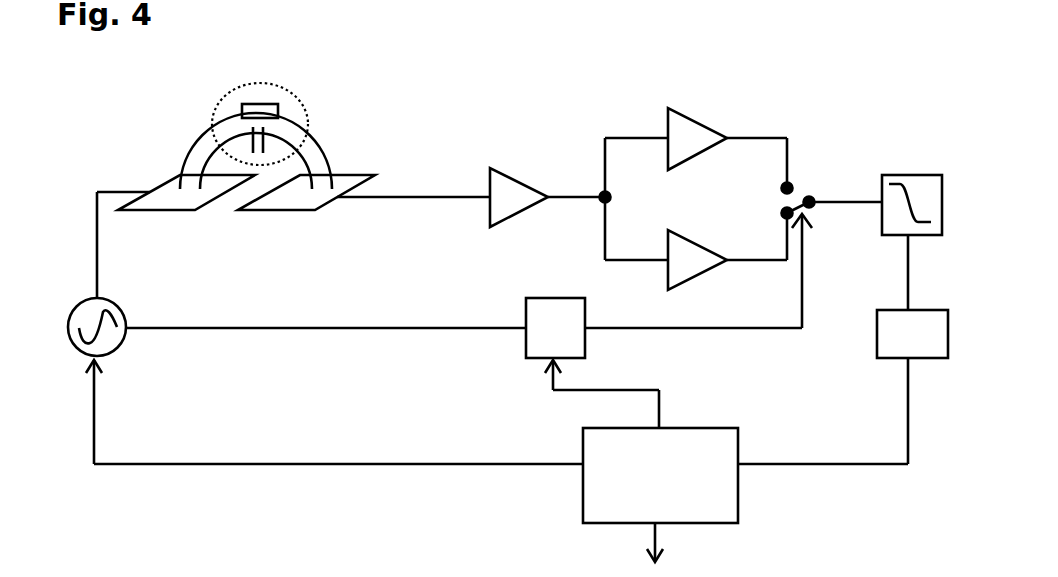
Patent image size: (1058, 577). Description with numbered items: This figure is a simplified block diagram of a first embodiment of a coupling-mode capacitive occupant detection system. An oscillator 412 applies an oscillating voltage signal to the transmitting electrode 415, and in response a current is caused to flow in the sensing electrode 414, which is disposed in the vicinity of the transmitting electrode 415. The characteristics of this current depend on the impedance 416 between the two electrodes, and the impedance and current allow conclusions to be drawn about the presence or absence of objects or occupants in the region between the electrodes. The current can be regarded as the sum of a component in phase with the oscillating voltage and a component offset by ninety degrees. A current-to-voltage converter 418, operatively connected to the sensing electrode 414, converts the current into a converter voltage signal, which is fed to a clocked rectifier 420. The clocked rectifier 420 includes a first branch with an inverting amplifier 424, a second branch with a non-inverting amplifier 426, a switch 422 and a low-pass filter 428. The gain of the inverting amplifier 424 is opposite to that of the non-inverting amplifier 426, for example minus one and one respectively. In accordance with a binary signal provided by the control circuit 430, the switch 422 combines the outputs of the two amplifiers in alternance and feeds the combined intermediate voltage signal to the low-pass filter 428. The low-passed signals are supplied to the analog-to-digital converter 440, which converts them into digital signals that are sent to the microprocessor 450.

The oscillator 412 is at (118, 303).
The sensing electrode 414 is at (288, 212).
The transmitting electrode 415 is at (167, 212).
The impedance 416 is at (308, 117).
The current-to-voltage converter 418 is at (518, 178).
The clocked rectifier 420 is at (656, 188).
The switch 422 is at (807, 178).
The inverting amplifier 424 is at (702, 152).
The non-inverting amplifier 426 is at (700, 237).
The low-pass filter 428 is at (878, 220).
The control circuit 430 is at (550, 298).
The analog-to-digital converter 440 is at (878, 335).
The microprocessor 450 is at (698, 427).